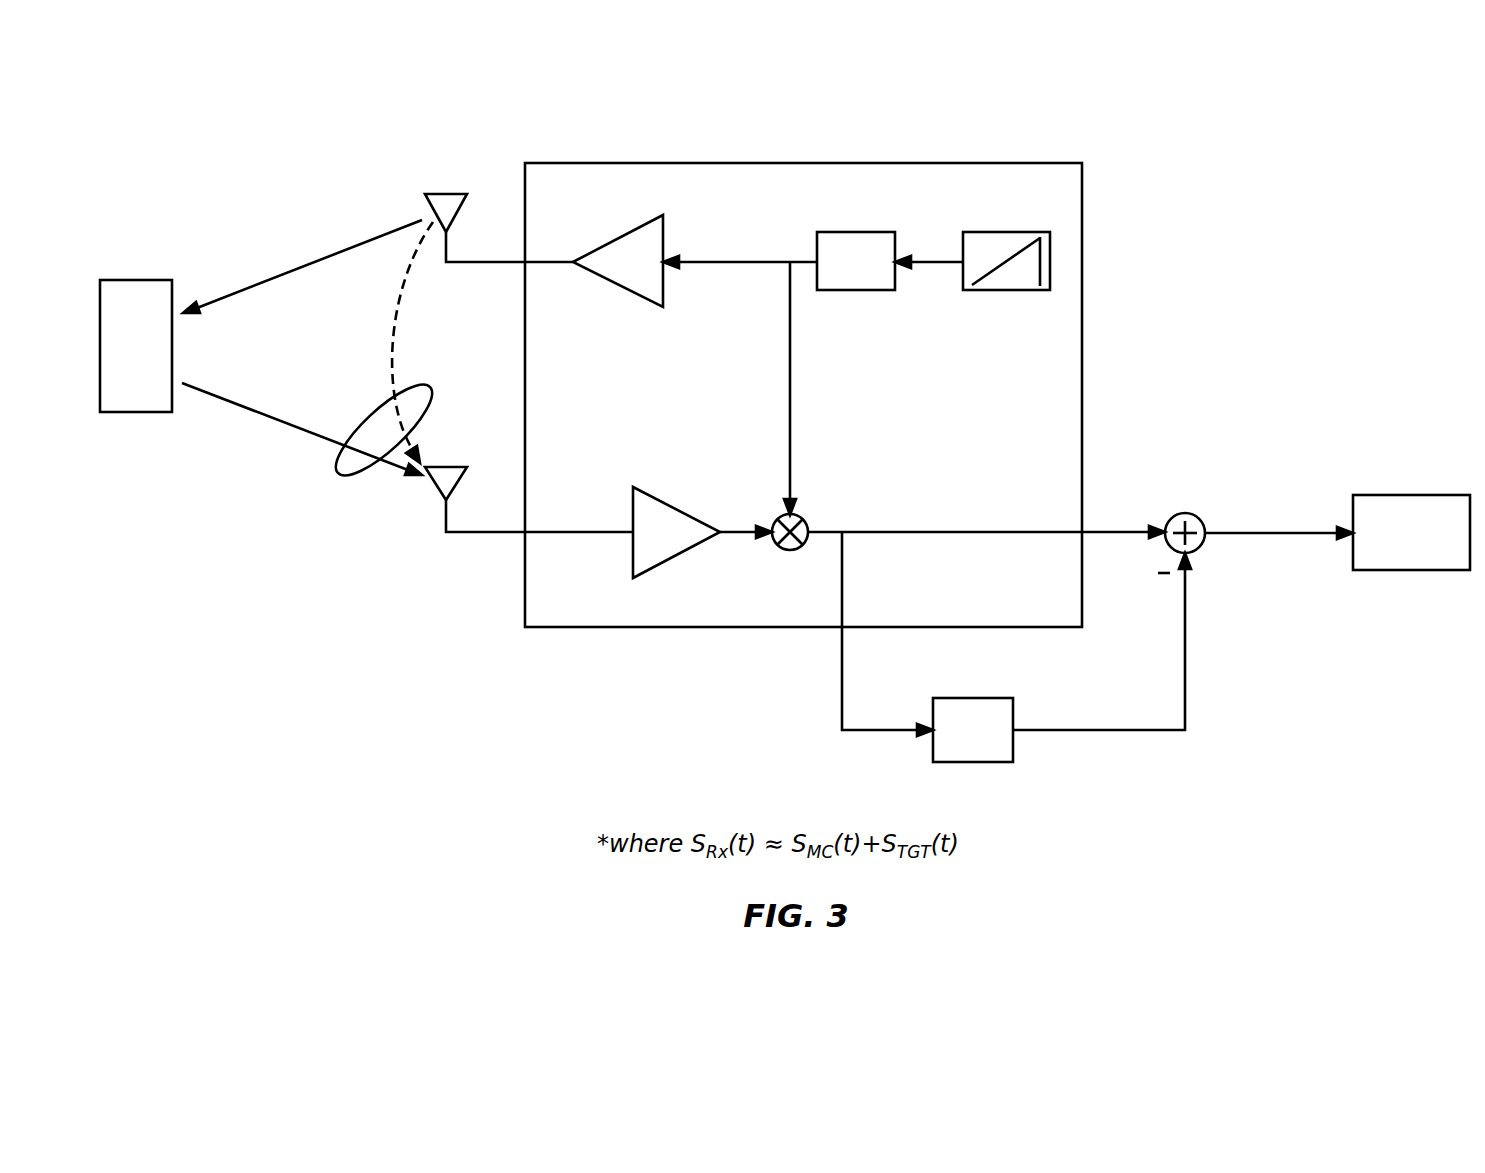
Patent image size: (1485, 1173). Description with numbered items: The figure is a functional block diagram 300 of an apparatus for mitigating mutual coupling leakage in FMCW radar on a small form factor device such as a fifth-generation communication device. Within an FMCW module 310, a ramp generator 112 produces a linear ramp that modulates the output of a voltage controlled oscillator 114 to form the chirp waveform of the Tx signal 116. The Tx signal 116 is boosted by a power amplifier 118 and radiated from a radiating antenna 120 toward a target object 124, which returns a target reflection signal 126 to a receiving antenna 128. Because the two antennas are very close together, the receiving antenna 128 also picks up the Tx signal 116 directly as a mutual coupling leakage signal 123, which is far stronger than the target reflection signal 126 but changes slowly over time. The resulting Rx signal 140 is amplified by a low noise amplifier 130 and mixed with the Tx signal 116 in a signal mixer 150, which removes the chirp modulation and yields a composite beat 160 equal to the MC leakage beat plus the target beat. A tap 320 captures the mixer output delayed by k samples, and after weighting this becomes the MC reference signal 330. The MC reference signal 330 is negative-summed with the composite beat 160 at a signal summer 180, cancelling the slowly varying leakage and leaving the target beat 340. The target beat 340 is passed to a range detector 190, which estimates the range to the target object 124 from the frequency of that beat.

The functional block diagram 300 is at (1339, 158).
The FMCW module 310 is at (808, 163).
The ramp generator 112 is at (990, 232).
The voltage controlled oscillator 114 is at (860, 232).
The Tx signal 116 is at (750, 264).
The power amplifier 118 is at (622, 230).
The radiating antenna 120 is at (455, 192).
The mutual coupling leakage signal 123 is at (397, 322).
The target object 124 is at (137, 280).
The target reflection signal 126 is at (295, 432).
The receiving antenna 128 is at (456, 467).
The low noise amplifier 130 is at (672, 497).
The Rx signal 140 is at (345, 478).
The signal mixer 150 is at (805, 517).
The composite beat 160 is at (940, 532).
The signal summer 180 is at (1172, 518).
The range detector 190 is at (1397, 495).
The tap 320 is at (970, 698).
The MC reference signal 330 is at (1185, 697).
The target beat 340 is at (1265, 533).